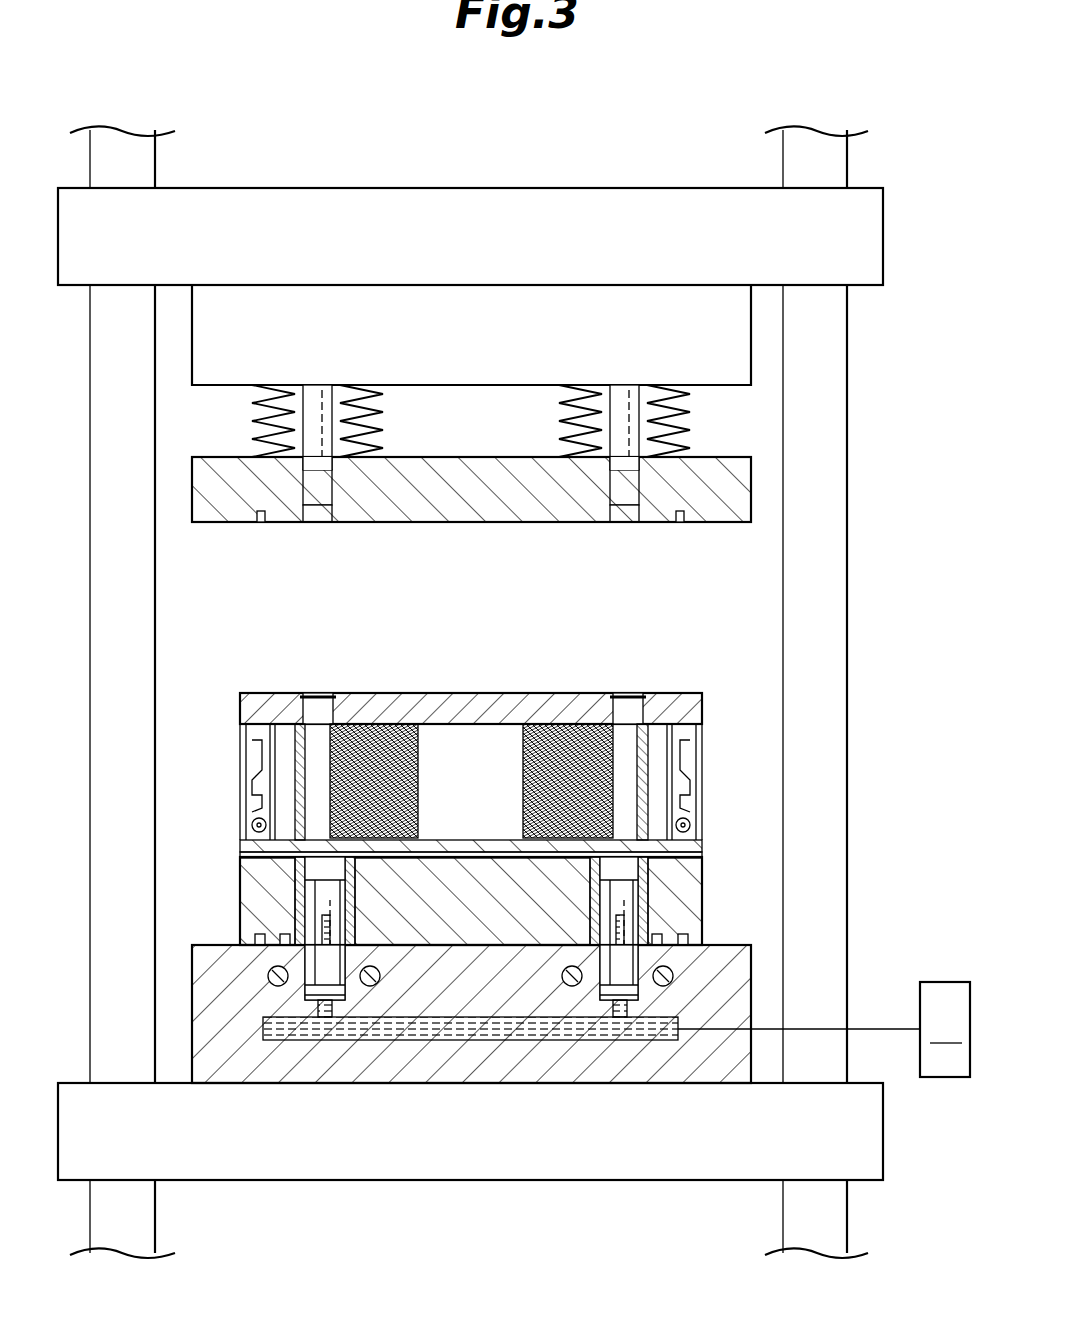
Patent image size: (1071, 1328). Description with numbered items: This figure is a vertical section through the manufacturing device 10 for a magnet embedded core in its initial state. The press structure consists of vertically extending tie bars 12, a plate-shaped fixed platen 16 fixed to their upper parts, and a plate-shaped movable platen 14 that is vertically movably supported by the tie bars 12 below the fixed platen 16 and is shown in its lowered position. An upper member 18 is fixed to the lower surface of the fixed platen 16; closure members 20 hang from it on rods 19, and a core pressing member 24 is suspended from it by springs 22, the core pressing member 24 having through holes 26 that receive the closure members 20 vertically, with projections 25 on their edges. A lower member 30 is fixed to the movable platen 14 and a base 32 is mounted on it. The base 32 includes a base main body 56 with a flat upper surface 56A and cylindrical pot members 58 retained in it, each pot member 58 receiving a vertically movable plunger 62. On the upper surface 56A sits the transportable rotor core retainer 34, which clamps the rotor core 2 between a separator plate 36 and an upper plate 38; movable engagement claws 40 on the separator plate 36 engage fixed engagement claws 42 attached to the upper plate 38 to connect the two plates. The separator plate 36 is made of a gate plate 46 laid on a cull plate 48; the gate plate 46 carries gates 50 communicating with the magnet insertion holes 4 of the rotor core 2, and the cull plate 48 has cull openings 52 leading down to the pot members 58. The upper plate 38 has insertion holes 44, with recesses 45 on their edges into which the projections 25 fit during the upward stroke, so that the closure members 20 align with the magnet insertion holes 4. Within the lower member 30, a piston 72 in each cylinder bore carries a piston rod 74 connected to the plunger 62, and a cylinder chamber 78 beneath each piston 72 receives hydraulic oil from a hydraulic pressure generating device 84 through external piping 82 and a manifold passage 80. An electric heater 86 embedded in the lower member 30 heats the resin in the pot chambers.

The rotor core 2 is at (556, 722).
The magnet insertion hole 4 is at (288, 722).
The manufacturing device 10 is at (858, 432).
The tie bar 12 is at (840, 573).
The movable platen 14 is at (468, 1165).
The fixed platen 16 is at (583, 205).
The upper member 18 is at (730, 330).
The rod 19 is at (322, 440).
The closure member 20 is at (318, 498).
The spring 22 is at (258, 428).
The core pressing member 24 is at (735, 497).
The projection 25 is at (305, 522).
The through hole 26 is at (335, 490).
The lower member 30 is at (740, 968).
The base 32 is at (704, 889).
The rotor core retainer 34 is at (232, 858).
The separator plate 36 is at (920, 822).
The upper plate 38 is at (700, 706).
The engagement claw 40 is at (690, 805).
The side frame 42 is at (690, 745).
The insertion hole 44 is at (302, 720).
The recess 45 is at (335, 693).
The gate plate 46 is at (700, 845).
The cull plate 48 is at (700, 858).
The gate 50 is at (420, 722).
The cull opening 52 is at (240, 858).
The base main body 56 is at (703, 880).
The upper surface 56A is at (466, 848).
The pot member 58 is at (285, 905).
The plunger 62 is at (355, 870).
The piston 72 is at (295, 988).
The piston rod 74 is at (345, 920).
The cylinder chamber 78 is at (328, 1002).
The manifold passage 80 is at (520, 1042).
The external piping 82 is at (887, 1031).
The hydraulic pressure generating device 84 is at (945, 1029).
The electric heater 86 is at (380, 976).